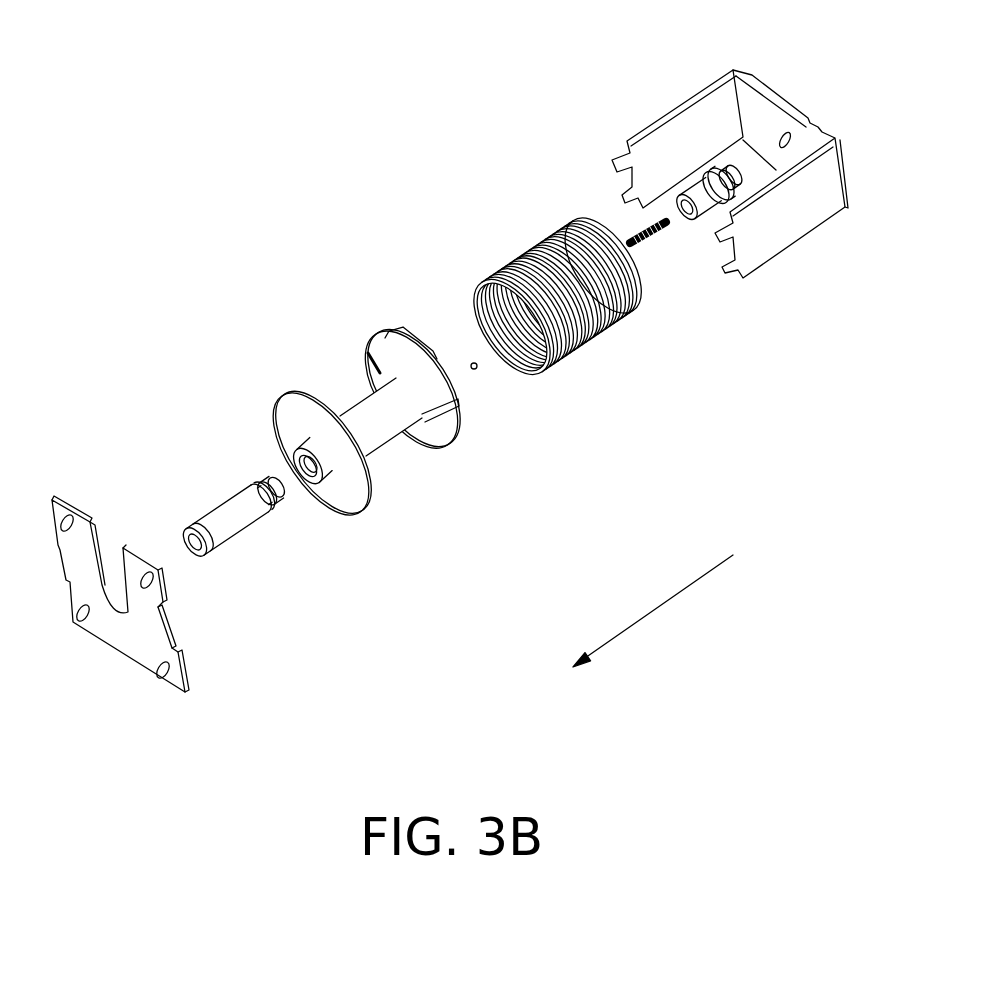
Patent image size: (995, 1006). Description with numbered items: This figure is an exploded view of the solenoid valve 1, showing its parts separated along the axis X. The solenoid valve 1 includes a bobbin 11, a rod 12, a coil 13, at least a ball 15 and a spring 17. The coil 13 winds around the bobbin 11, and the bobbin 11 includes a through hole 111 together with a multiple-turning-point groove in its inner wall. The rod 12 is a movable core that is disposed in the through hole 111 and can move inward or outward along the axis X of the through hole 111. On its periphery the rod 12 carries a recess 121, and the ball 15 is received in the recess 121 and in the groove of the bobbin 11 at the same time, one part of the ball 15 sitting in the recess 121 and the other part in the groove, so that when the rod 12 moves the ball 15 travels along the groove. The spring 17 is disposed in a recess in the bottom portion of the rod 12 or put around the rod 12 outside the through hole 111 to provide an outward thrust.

The solenoid valve 1 is at (59, 46).
The bobbin 11 is at (375, 430).
The through hole 111 is at (304, 462).
The rod 12 is at (222, 512).
The recess 121 is at (248, 492).
The coil 13 is at (537, 243).
The ball 15 is at (476, 370).
The spring 17 is at (653, 243).